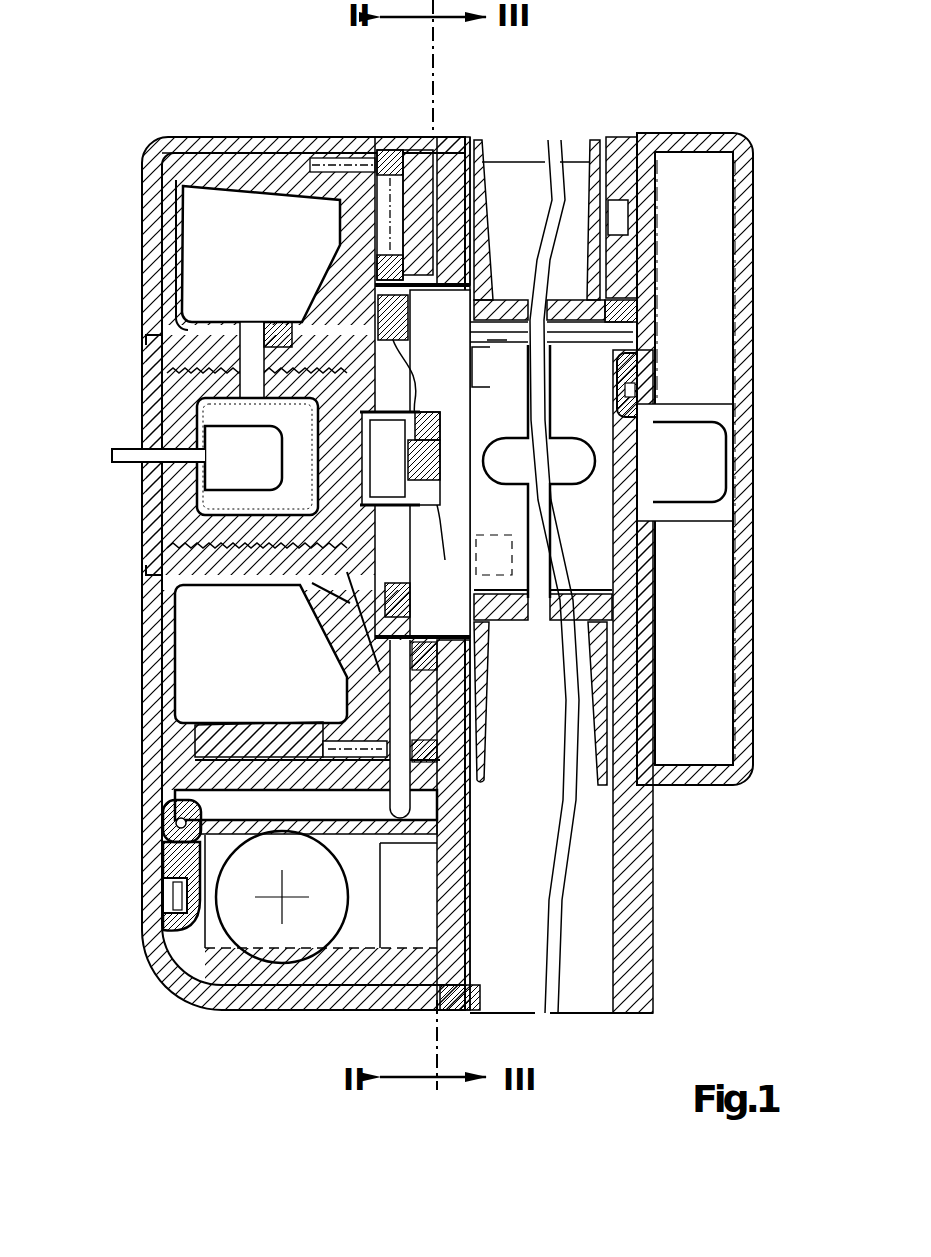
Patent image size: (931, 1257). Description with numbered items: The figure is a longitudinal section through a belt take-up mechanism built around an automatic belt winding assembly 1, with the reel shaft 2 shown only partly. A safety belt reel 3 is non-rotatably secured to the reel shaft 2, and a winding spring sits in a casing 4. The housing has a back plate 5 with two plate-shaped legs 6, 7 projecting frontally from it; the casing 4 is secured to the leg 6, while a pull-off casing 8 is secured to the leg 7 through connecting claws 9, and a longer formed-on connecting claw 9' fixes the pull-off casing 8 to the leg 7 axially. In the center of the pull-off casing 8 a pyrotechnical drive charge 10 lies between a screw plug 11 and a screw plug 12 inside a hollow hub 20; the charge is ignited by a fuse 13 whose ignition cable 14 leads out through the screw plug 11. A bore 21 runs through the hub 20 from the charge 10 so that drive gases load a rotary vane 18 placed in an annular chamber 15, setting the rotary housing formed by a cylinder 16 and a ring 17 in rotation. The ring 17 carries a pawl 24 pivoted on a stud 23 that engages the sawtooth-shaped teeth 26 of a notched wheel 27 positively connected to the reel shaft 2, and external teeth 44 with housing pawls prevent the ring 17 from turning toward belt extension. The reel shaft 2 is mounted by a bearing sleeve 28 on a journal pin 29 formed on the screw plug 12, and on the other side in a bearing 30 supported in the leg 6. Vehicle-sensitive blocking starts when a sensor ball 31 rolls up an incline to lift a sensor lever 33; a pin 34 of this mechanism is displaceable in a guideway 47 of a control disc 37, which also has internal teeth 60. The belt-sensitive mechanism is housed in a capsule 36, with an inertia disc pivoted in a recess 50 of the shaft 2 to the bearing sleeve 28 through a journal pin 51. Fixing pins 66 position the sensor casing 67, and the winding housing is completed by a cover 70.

The automatic belt winding assembly 1 is at (706, 905).
The reel shaft 2 is at (668, 440).
The safety belt reel 3 is at (600, 160).
The casing 4 is at (652, 160).
The back plate 5 is at (598, 1000).
The leg 6 is at (623, 883).
The leg 7 is at (458, 858).
The pull-off casing 8 is at (148, 172).
The connecting claws 9 is at (422, 178).
The connecting claw 9' is at (489, 1017).
The pyrotechnical drive charge 10 is at (205, 500).
The screw plug 11 is at (165, 405).
The screw plug 12 is at (245, 330).
The fuse 13 is at (205, 475).
The ignition cable 14 is at (118, 455).
The annular chamber 15 is at (231, 658).
The cylinder 16 is at (240, 165).
The ring 17 is at (355, 700).
The rotary vane 18 is at (226, 218).
The hollow hub 20 is at (215, 575).
The bore 21 is at (266, 345).
The stud 23 is at (476, 150).
The pawl 24 is at (390, 190).
The sawtooth-shaped teeth 26 is at (397, 288).
The notched wheel 27 is at (402, 606).
The bearing sleeve 28 is at (425, 495).
The journal pin 29 is at (395, 485).
The bearing 30 is at (637, 305).
The sensor ball 31 is at (264, 933).
The sensor lever 33 is at (225, 828).
The pin 34 is at (400, 812).
The capsule 36 is at (451, 342).
The control disc 37 is at (417, 190).
The external teeth 44 is at (330, 160).
The guideway 47 is at (372, 722).
The recess 50 is at (433, 420).
The journal pin 51 is at (432, 450).
The internal teeth 60 is at (440, 262).
The fixing pins 66 is at (166, 893).
The casing 67 is at (183, 848).
The cover 70 is at (701, 788).